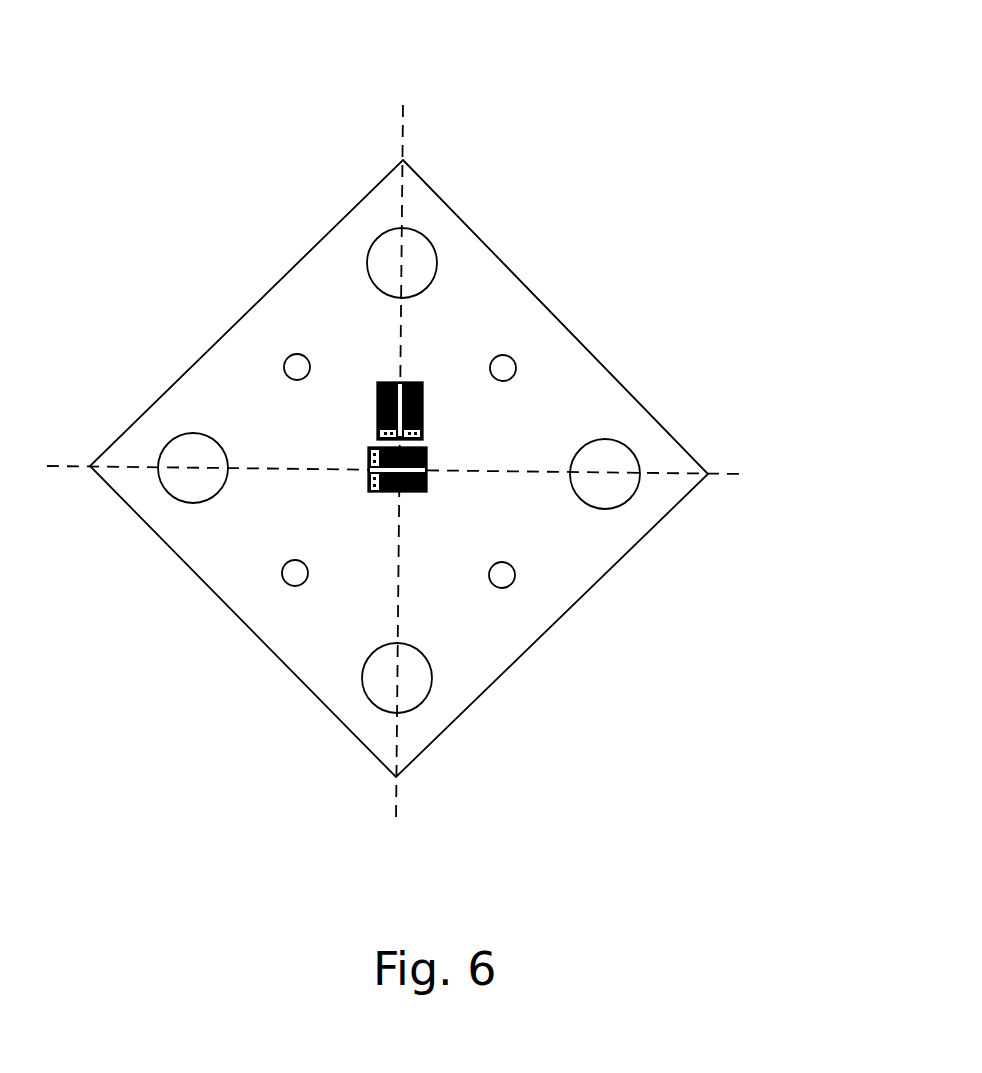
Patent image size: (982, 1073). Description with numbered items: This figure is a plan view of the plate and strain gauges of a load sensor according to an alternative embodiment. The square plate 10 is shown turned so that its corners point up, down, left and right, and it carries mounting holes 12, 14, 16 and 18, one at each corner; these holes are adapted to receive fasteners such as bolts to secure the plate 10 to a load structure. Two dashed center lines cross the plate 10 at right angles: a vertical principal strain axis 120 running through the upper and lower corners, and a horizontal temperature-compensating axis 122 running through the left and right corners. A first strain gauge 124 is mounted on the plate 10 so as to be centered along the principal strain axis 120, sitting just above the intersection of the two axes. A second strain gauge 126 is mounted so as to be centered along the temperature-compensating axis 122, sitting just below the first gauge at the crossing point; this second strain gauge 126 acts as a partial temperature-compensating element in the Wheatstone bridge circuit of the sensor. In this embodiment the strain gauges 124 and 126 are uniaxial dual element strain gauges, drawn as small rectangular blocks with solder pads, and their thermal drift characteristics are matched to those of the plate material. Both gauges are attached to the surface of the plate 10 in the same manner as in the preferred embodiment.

The plate 10 is at (399, 468).
The mounting hole 12 is at (345, 221).
The mounting hole 14 is at (137, 429).
The mounting hole 16 is at (455, 716).
The mounting hole 18 is at (673, 437).
The principal strain axis 120 is at (403, 105).
The temperature-compensating axis 122 is at (745, 474).
The first strain gauge 124 is at (522, 334).
The second strain gauge 126 is at (519, 566).